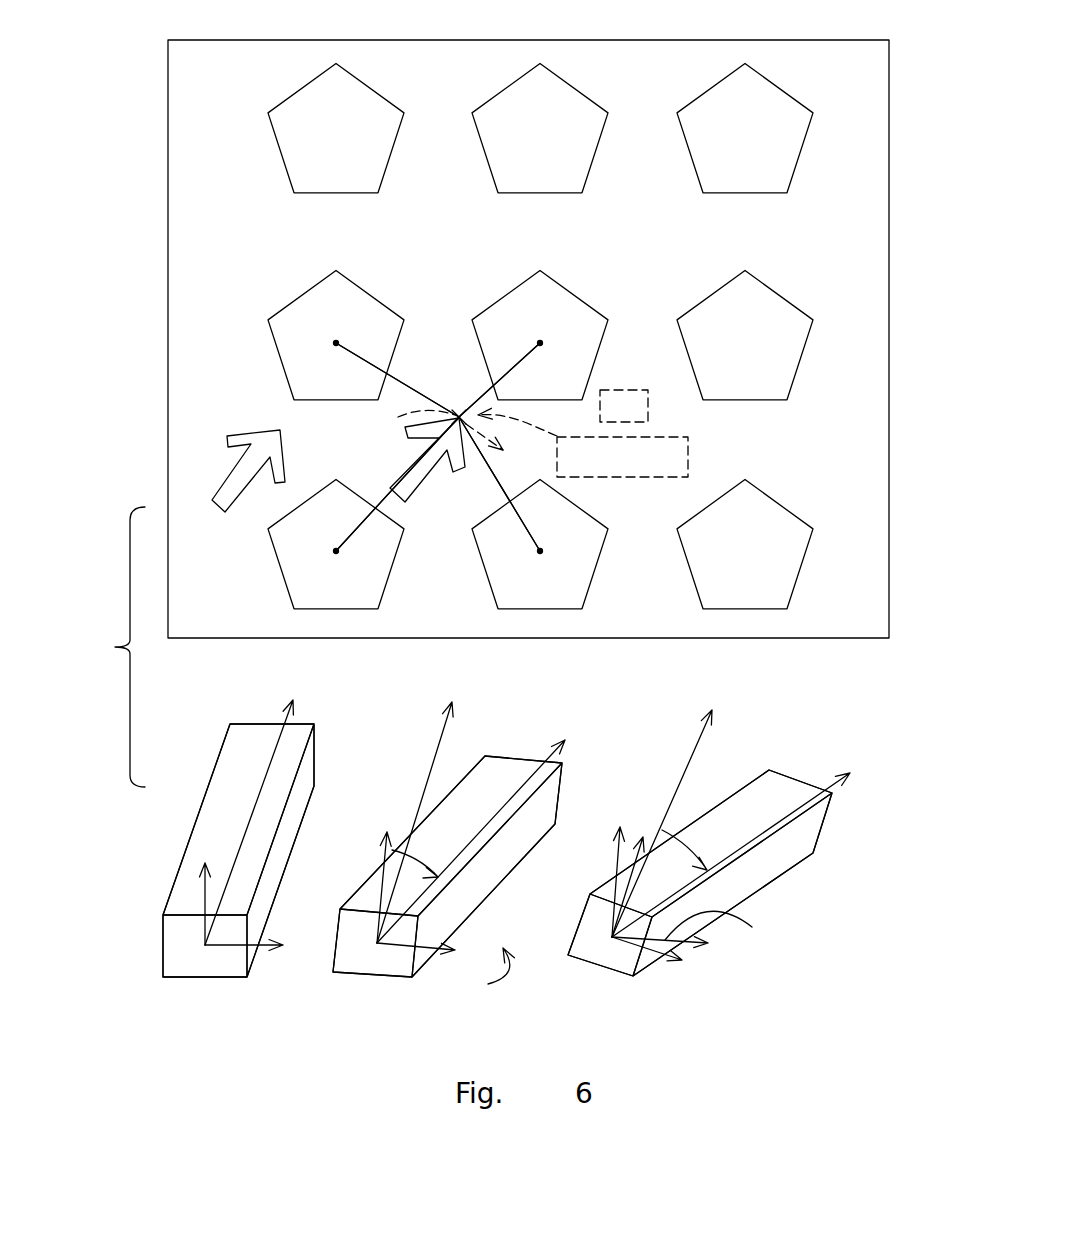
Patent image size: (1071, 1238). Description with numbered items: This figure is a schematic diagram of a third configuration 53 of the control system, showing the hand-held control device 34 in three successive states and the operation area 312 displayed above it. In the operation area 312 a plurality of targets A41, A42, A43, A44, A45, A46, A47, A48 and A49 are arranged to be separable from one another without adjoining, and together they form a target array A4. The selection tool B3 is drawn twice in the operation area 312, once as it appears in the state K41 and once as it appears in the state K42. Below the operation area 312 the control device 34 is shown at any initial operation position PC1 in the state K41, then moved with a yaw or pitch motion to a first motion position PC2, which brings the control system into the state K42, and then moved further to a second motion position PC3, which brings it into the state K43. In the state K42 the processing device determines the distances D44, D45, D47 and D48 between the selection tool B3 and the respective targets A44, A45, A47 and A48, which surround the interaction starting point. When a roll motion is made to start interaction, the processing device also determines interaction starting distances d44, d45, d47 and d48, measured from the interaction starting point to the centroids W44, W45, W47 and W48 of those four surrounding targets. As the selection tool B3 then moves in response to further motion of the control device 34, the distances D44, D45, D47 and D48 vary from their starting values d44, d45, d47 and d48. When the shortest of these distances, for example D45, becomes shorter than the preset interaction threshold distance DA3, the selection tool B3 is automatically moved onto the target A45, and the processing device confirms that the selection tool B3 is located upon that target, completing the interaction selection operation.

The operation area 312 is at (445, 39).
The third configuration 53 is at (590, 27).
The target array A4 is at (617, 72).
The target A41 is at (281, 157).
The target A42 is at (485, 157).
The target A43 is at (690, 157).
The target A44 is at (366, 291).
The target A45 is at (570, 291).
The target A46 is at (747, 316).
The target A47 is at (282, 572).
The target A48 is at (486, 573).
The target A49 is at (691, 573).
The centroid W44 is at (324, 328).
The centroid W45 is at (563, 343).
The centroid W47 is at (332, 568).
The centroid W48 is at (541, 571).
The distance D44 is at (397, 380).
The interaction starting distance d44 is at (394, 380).
The distance D45 is at (499, 373).
The interaction starting distance d45 is at (506, 380).
The distance D47 is at (387, 484).
The interaction starting distance d47 is at (397, 486).
The distance D48 is at (499, 484).
The interaction starting distance d48 is at (499, 484).
The interaction threshold distance DA3 is at (624, 407).
The selection tool B3 is at (218, 492).
The state K41 is at (238, 775).
The state K42 is at (447, 724).
The state K43 is at (694, 738).
The control device 34 is at (213, 772).
The initial operation position PC1 is at (264, 817).
The first motion position PC2 is at (484, 680).
The second motion position PC3 is at (742, 831).